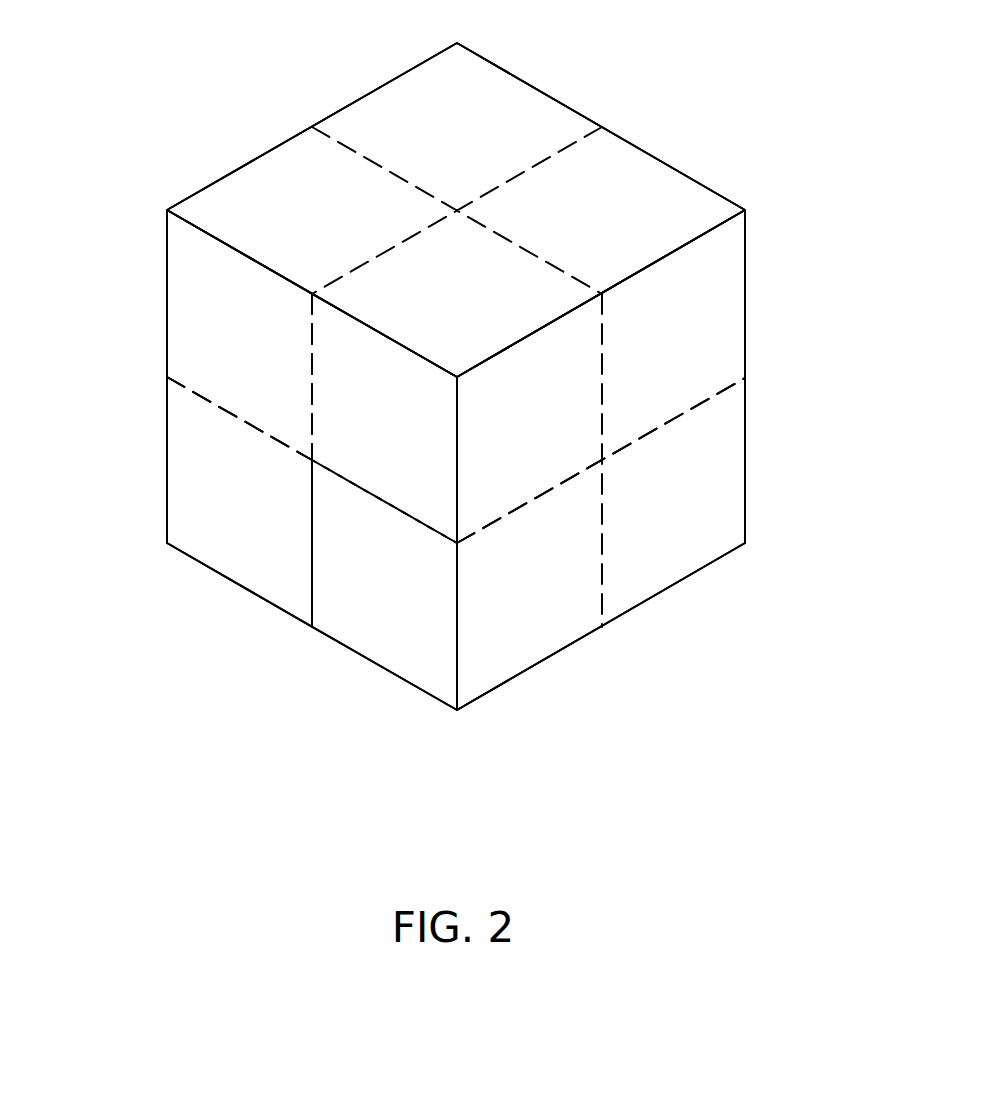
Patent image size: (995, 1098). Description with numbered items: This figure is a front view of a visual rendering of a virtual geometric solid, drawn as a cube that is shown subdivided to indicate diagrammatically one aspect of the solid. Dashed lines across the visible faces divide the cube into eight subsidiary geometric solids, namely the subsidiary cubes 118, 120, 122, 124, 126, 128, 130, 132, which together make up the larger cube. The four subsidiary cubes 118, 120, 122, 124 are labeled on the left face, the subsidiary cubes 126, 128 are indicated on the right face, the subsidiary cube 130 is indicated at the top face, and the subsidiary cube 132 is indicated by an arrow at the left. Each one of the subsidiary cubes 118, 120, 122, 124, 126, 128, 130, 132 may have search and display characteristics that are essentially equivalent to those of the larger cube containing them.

The subsidiary cube 118 is at (239, 335).
The subsidiary cube 120 is at (384, 418).
The subsidiary cube 122 is at (239, 502).
The subsidiary cube 124 is at (384, 585).
The subsidiary cube 126 is at (730, 487).
The subsidiary cube 128 is at (718, 313).
The subsidiary cube 130 is at (499, 117).
The subsidiary cube 132 is at (155, 310).